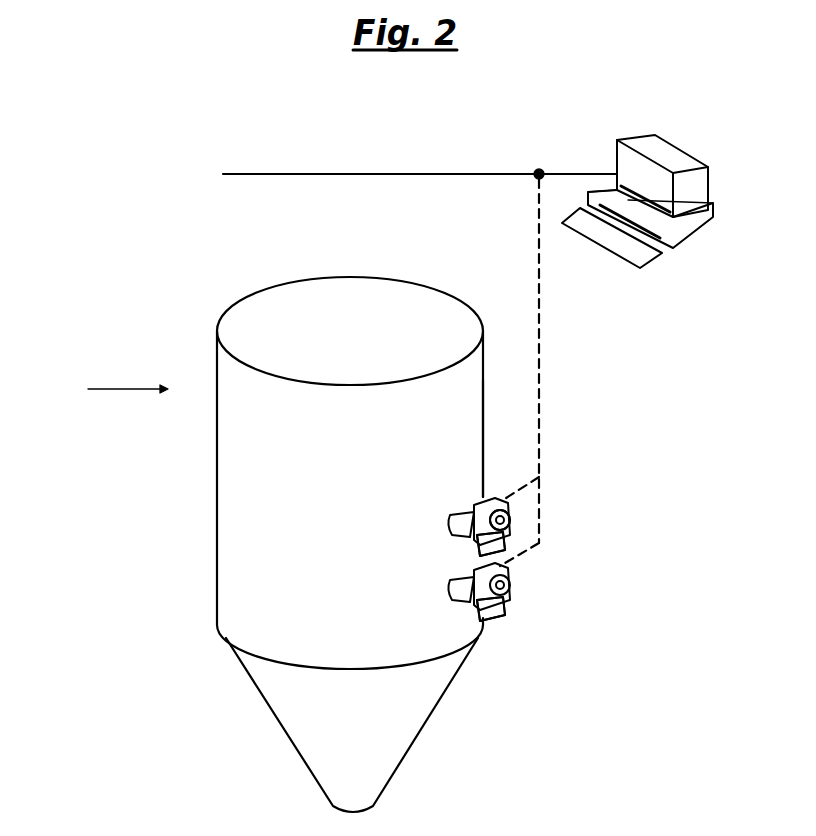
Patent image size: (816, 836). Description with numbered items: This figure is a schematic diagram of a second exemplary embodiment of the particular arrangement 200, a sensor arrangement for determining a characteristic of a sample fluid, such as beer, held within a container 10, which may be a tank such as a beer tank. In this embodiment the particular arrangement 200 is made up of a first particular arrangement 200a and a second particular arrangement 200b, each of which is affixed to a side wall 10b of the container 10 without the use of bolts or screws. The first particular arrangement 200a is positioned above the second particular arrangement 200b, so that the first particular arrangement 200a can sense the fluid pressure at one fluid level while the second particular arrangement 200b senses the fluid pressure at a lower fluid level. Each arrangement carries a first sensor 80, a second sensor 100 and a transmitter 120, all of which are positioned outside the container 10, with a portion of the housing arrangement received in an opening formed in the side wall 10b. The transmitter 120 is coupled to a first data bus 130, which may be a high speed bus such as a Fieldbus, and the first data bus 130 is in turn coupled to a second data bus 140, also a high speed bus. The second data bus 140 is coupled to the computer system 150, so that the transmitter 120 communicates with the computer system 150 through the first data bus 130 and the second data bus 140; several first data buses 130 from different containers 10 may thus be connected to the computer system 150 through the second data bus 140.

The container 10 is at (163, 300).
The side wall 10b is at (483, 395).
The first sensor 80 is at (503, 542).
The second sensor 100 is at (507, 610).
The transmitter 120 is at (513, 514).
The first data bus 130 is at (541, 310).
The second data bus 140 is at (341, 174).
The computer system 150 is at (693, 230).
The particular arrangement 200 is at (100, 390).
The first particular arrangement 200a is at (428, 523).
The second particular arrangement 200b is at (438, 581).